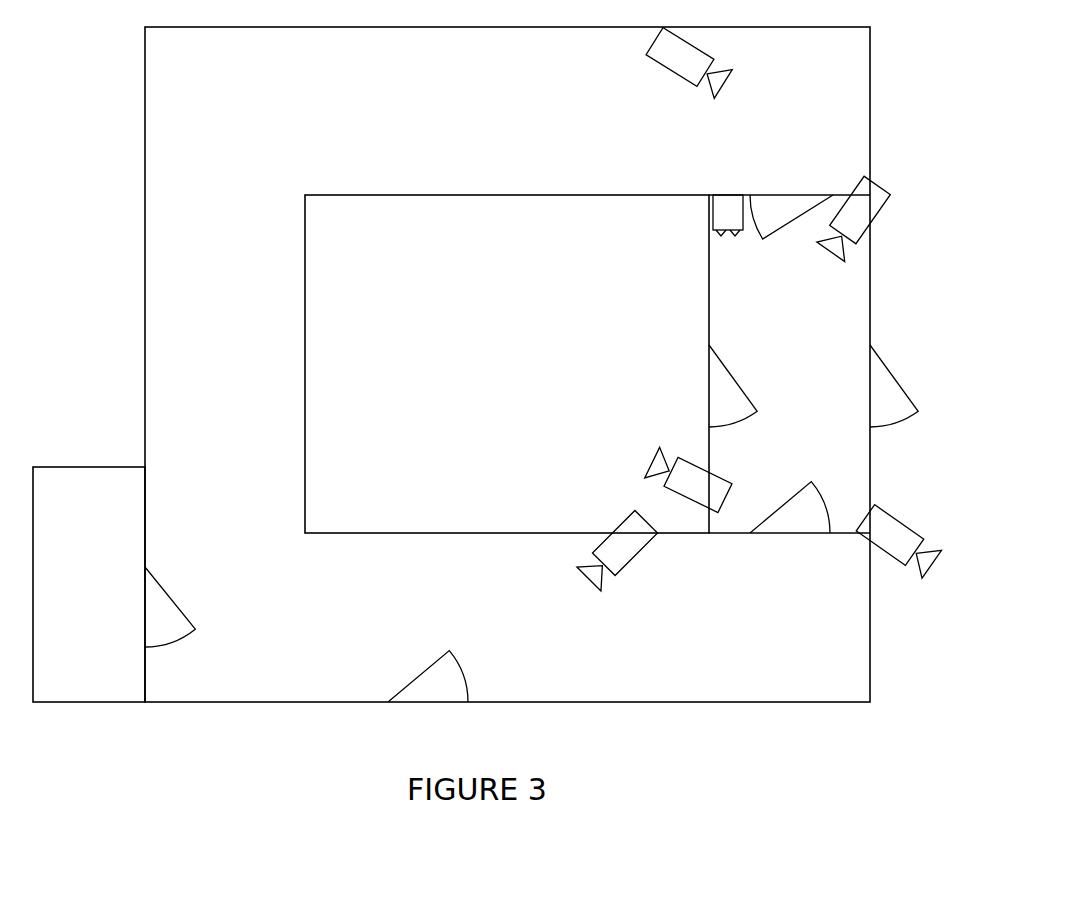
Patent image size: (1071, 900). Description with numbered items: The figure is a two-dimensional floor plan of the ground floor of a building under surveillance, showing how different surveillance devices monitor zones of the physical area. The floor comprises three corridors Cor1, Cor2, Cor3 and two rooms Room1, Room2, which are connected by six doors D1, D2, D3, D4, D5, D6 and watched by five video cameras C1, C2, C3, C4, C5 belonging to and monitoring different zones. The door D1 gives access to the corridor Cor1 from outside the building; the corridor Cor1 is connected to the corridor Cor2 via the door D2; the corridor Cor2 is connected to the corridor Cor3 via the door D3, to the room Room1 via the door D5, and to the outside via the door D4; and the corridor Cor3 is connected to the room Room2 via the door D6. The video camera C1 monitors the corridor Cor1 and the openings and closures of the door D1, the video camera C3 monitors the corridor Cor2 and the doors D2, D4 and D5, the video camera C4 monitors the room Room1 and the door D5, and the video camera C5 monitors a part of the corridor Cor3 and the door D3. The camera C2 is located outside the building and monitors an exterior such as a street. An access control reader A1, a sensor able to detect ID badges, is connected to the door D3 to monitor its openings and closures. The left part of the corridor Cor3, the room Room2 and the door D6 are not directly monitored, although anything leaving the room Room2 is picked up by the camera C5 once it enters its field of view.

The video camera C1 is at (617, 550).
The video camera C2 is at (899, 541).
The video camera C3 is at (854, 219).
The video camera C4 is at (689, 480).
The video camera C5 is at (689, 63).
The door D1 is at (428, 676).
The door D2 is at (790, 507).
The door D3 is at (791, 217).
The door D4 is at (894, 386).
The door D5 is at (733, 386).
The door D6 is at (170, 607).
The access control reader A1 is at (728, 215).
The room Room1 is at (507, 364).
The room Room2 is at (89, 584).
The corridor Cor1 is at (507, 586).
The corridor Cor2 is at (789, 364).
The corridor Cor3 is at (225, 111).